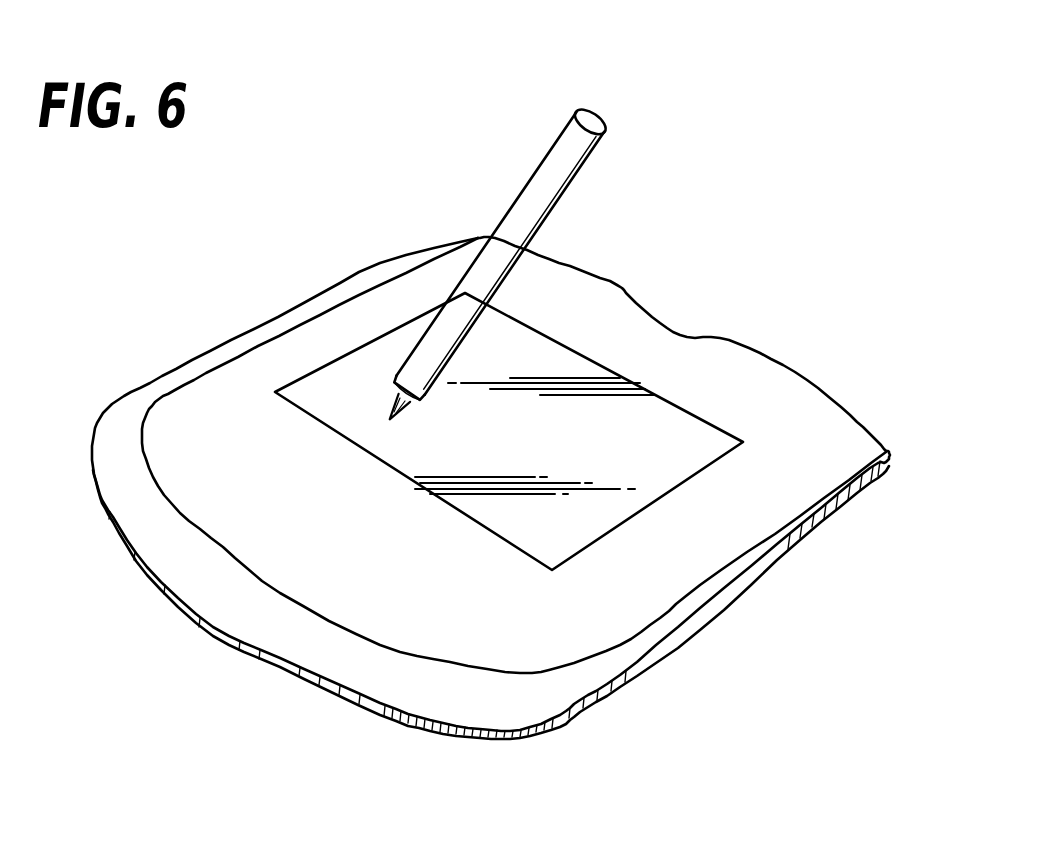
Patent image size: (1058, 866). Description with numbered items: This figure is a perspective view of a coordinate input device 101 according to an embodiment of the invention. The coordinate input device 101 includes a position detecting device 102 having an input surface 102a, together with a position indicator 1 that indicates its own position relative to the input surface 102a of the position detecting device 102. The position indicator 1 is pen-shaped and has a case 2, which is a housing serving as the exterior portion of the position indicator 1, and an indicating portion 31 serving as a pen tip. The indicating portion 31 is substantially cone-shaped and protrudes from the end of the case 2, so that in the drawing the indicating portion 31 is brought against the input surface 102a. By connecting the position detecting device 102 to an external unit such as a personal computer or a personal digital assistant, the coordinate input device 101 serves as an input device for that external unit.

The position indicator 1 is at (539, 338).
The case 2 is at (512, 220).
The indicating portion 31 is at (400, 411).
The coordinate input device 101 is at (491, 458).
The position detecting device 102 is at (491, 488).
The input surface 102a is at (668, 472).